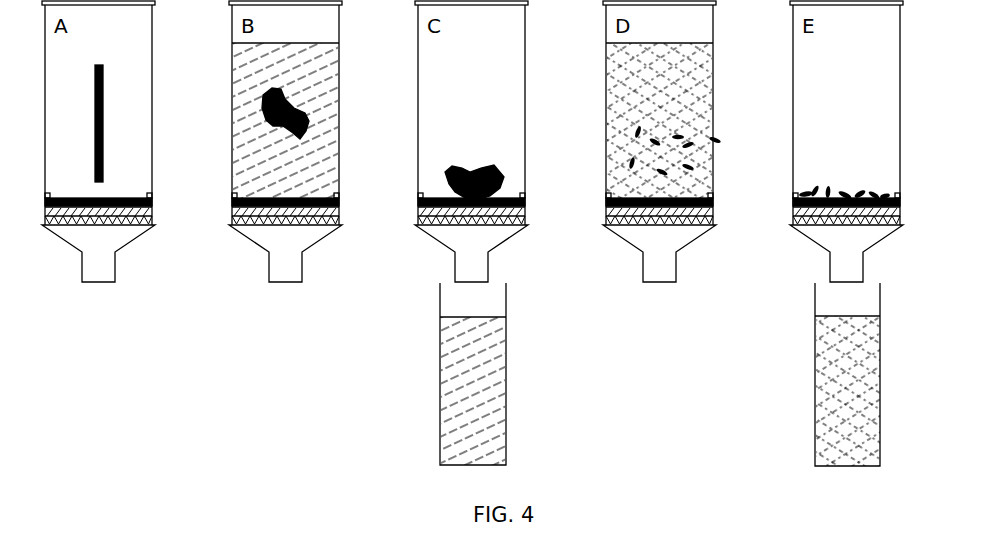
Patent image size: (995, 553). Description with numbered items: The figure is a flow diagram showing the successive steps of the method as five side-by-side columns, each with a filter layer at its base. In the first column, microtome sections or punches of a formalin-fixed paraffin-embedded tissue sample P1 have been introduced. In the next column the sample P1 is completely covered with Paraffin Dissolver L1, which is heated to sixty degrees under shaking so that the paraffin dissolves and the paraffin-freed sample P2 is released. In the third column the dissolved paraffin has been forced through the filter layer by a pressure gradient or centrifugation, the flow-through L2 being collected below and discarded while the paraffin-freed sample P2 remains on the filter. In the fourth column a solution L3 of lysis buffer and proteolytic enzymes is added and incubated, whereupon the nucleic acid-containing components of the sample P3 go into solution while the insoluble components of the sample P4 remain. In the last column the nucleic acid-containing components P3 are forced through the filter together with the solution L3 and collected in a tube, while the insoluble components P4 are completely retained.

The sample P1 is at (103, 125).
The Paraffin Dissolver L1 is at (322, 72).
The paraffin-freed sample P2 is at (308, 128).
The flow-through L2 is at (484, 391).
The solution L3 is at (693, 82).
The nucleic acid-containing components of the sample P3 is at (677, 117).
The insoluble components of the sample P4 is at (657, 173).